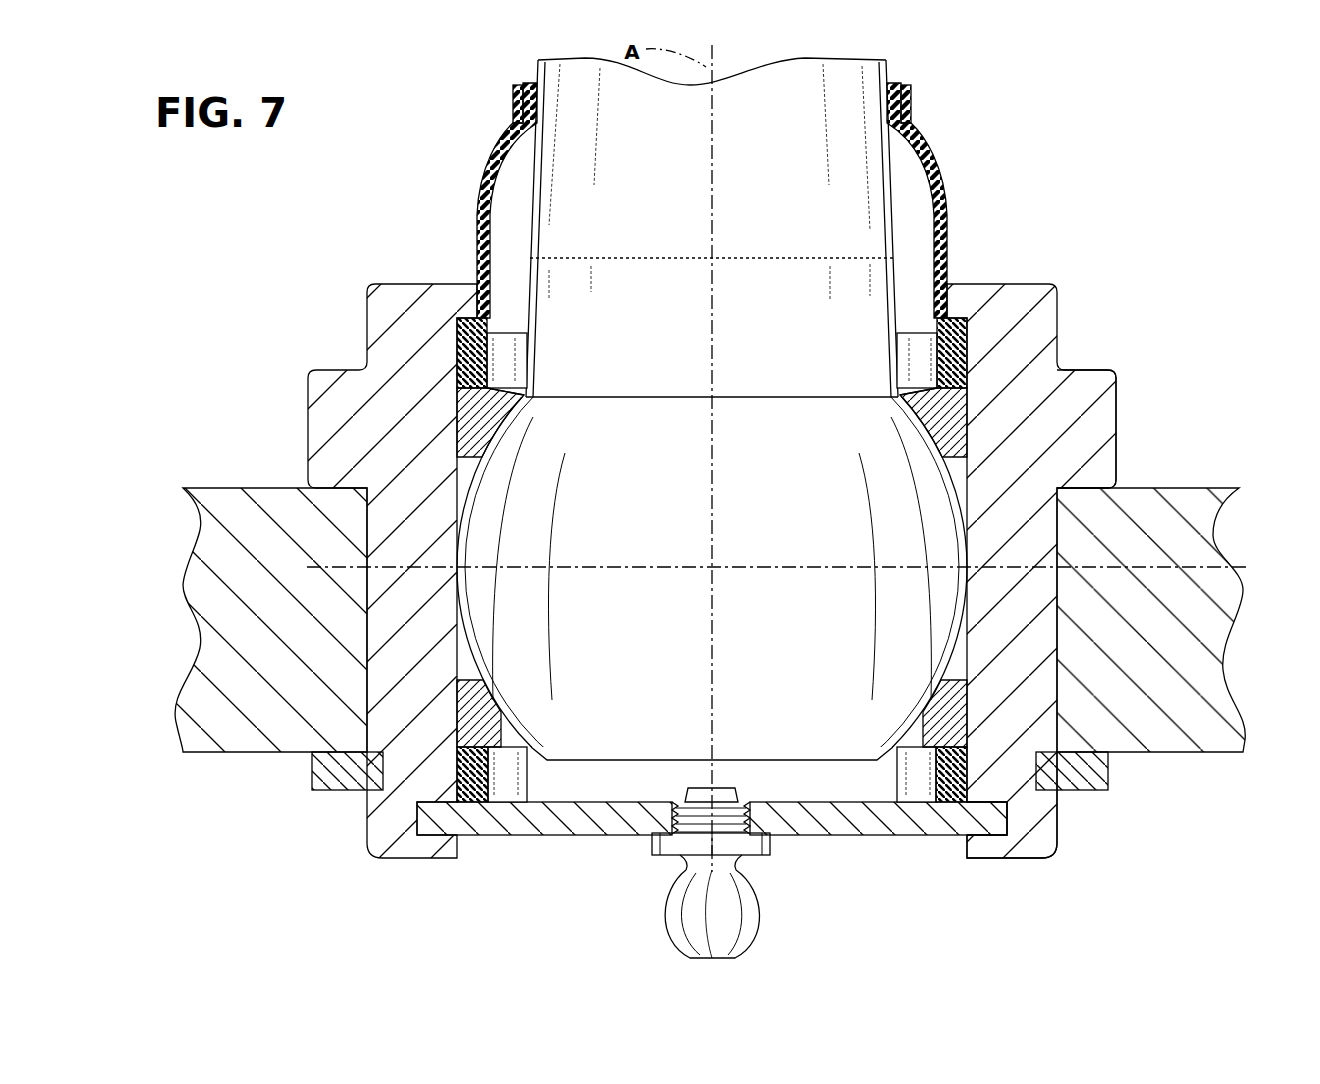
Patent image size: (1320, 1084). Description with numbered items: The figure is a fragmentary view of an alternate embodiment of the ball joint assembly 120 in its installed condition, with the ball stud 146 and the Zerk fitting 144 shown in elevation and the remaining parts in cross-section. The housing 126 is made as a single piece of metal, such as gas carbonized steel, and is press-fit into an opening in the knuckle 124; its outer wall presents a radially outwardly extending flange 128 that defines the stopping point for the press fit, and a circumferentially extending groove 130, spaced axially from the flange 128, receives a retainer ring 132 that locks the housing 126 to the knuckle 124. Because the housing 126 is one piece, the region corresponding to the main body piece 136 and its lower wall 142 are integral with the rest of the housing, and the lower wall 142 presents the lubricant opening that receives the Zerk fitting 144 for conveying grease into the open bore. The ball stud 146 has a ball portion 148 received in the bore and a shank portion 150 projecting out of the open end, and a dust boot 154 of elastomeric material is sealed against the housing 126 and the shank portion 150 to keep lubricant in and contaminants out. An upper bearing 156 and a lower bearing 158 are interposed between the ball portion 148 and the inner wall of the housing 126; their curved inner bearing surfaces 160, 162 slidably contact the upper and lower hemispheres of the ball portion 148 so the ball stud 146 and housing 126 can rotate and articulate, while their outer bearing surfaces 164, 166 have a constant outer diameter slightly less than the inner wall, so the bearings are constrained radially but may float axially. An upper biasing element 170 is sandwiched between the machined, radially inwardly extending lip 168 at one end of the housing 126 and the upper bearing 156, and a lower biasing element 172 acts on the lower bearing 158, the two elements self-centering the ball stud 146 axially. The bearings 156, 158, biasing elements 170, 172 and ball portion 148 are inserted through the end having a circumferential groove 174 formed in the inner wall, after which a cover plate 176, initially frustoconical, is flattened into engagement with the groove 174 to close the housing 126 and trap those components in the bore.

The ball joint assembly 120 is at (314, 866).
The knuckle 124 is at (1167, 538).
The housing 126 is at (459, 882).
The radially outwardly extending flange 128 is at (1107, 443).
The circumferentially extending groove 130 is at (383, 773).
The retainer ring 132 is at (1108, 773).
The main body piece 136 is at (400, 623).
The lower wall 142 is at (585, 802).
The Zerk fitting 144 is at (724, 929).
The ball stud 146 is at (910, 203).
The ball portion 148 is at (712, 567).
The shank portion 150 is at (712, 227).
The dust boot 154 is at (945, 222).
The upper bearing 156 is at (950, 407).
The lower bearing 158 is at (1008, 750).
The curved inner bearing surface 160 is at (940, 457).
The curved inner bearing surface 162 is at (937, 697).
The outer bearing surface 164 is at (455, 437).
The outer bearing surface 166 is at (457, 712).
The lip 168 is at (474, 292).
The upper biasing element 170 is at (455, 360).
The lower biasing element 172 is at (466, 802).
The circumferential groove 174 is at (1007, 817).
The cover plate 176 is at (917, 823).